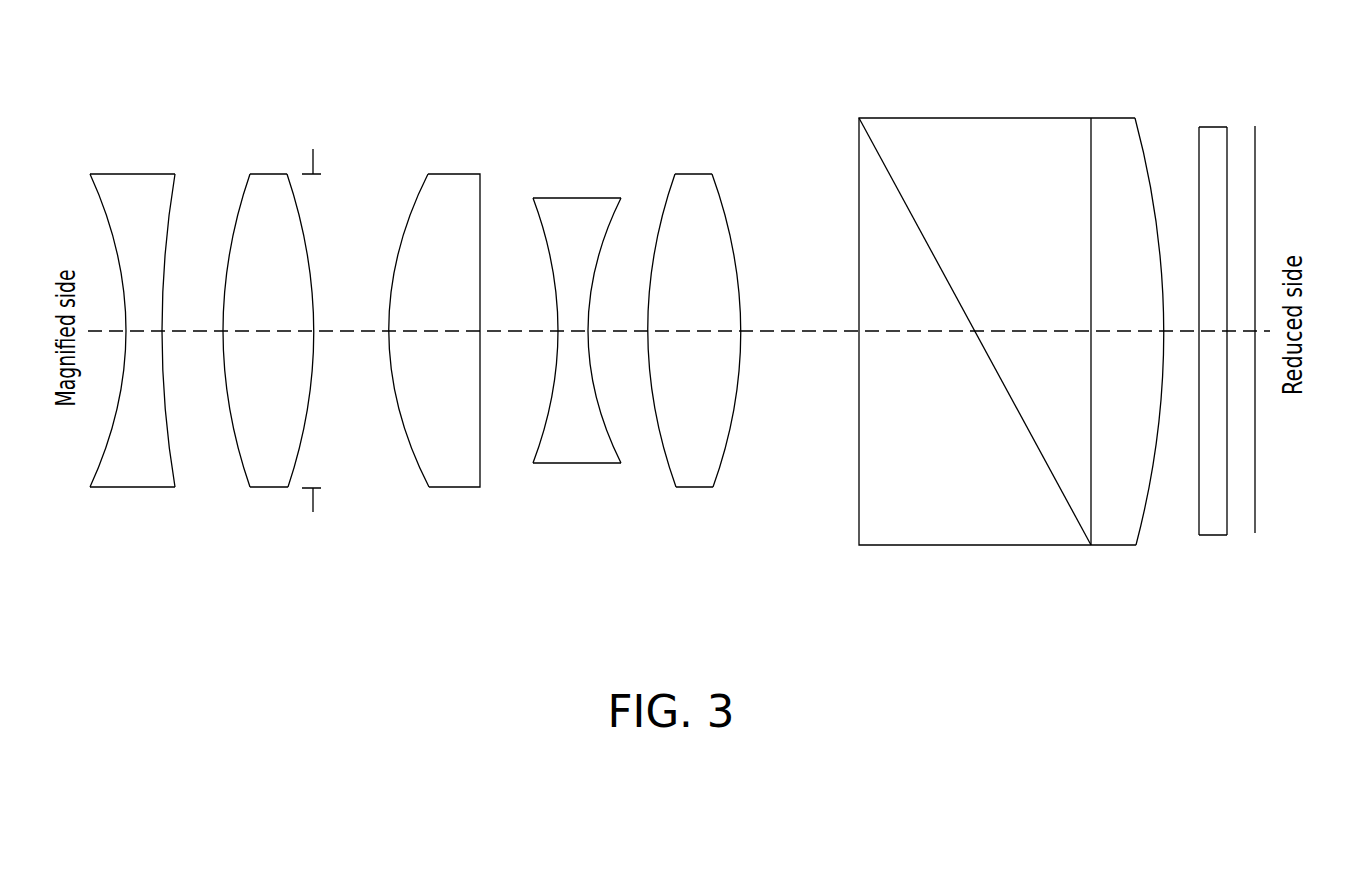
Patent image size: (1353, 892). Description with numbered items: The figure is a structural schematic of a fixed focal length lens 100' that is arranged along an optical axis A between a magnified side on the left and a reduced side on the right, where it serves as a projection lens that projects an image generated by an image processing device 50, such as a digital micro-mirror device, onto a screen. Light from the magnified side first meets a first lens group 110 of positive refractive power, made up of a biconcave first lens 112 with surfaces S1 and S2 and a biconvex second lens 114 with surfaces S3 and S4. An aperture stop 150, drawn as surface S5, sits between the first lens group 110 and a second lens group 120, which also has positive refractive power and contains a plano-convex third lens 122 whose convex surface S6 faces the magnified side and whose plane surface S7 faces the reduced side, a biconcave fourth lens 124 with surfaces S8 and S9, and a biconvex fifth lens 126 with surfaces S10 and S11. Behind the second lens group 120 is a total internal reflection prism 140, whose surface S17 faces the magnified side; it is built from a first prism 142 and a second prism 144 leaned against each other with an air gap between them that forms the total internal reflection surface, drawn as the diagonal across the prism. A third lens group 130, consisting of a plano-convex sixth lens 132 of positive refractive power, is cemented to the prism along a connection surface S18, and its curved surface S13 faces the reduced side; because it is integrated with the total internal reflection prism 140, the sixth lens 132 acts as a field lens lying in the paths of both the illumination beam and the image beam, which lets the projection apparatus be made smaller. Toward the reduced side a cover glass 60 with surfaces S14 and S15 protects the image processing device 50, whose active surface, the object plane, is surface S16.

The fixed focal length lens 100' is at (673, 362).
The optical axis A is at (793, 330).
The first lens group 110 is at (282, 562).
The first lens 112 is at (125, 338).
The second lens 114 is at (268, 322).
The aperture stop 150 is at (335, 319).
The second lens group 120 is at (728, 563).
The third lens 122 is at (455, 332).
The fourth lens 124 is at (584, 338).
The fifth lens 126 is at (709, 327).
The third lens group 130 is at (1145, 617).
The sixth lens 132 is at (1098, 332).
The total internal reflection prism 140 is at (1055, 617).
The first prism 142 is at (945, 345).
The second prism 144 is at (1057, 445).
The cover glass 60 is at (1217, 335).
The image processing device 50 is at (1274, 336).
The surface of first lens S1 is at (103, 212).
The surface of first lens S2 is at (171, 209).
The surface of second lens S3 is at (242, 201).
The surface of second lens S4 is at (295, 195).
The aperture stop surface S5 is at (318, 160).
The surface of third lens S6 is at (410, 213).
The surface of third lens S7 is at (482, 197).
The surface of fourth lens S8 is at (543, 233).
The surface of fourth lens S9 is at (613, 222).
The surface of fifth lens S10 is at (665, 203).
The surface of fifth lens S11 is at (723, 207).
The surface of total internal reflection prism S17 is at (858, 152).
The connection surface S18 is at (1088, 144).
The surface of sixth lens S13 is at (1142, 143).
The surface of cover glass S14 is at (1198, 167).
The surface of cover glass S15 is at (1228, 162).
The active surface of image processing device S16 is at (1254, 230).